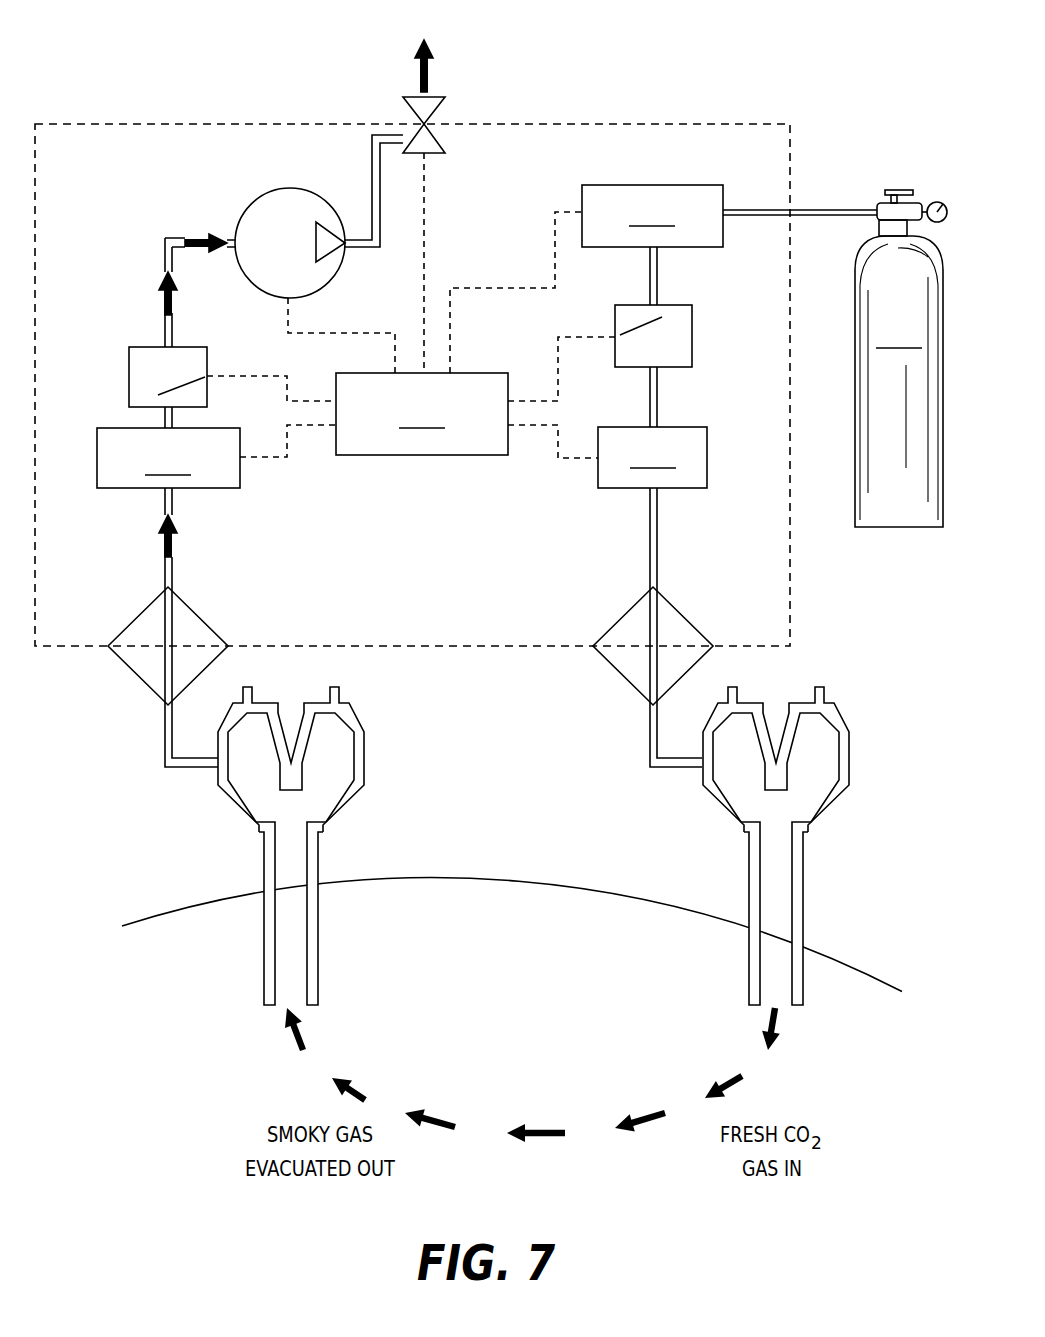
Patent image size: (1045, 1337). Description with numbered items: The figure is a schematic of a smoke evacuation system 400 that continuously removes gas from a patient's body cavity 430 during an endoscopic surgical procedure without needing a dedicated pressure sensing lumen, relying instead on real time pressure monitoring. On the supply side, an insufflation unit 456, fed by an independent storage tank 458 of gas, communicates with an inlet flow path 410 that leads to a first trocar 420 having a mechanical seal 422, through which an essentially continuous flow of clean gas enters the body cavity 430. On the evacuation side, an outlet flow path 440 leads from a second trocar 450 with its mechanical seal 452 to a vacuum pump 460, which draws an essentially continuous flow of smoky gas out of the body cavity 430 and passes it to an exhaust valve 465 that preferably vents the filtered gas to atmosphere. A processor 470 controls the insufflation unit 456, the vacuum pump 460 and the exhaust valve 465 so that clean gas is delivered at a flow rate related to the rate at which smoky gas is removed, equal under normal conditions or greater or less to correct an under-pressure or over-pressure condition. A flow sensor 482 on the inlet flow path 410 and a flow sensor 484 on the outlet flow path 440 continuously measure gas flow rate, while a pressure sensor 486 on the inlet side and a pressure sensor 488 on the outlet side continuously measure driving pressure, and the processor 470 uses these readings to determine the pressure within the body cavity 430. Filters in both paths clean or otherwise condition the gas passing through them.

The smoke evacuation system 400 is at (135, 88).
The inlet flow path 410 is at (603, 700).
The first trocar 420 is at (803, 930).
The mechanical seal 422 is at (790, 777).
The body cavity 430 is at (573, 930).
The outlet flow path 440 is at (150, 730).
The second trocar 450 is at (268, 878).
The mechanical seal 452 is at (302, 770).
The insufflation unit 456 is at (729, 216).
The storage tank 458 is at (901, 358).
The vacuum pump 460 is at (272, 190).
The exhaust valve 465 is at (440, 105).
The processor 470 is at (411, 305).
The flow sensor 482 is at (652, 457).
The flow sensor 484 is at (168, 458).
The pressure sensor 486 is at (692, 332).
The pressure sensor 488 is at (129, 378).